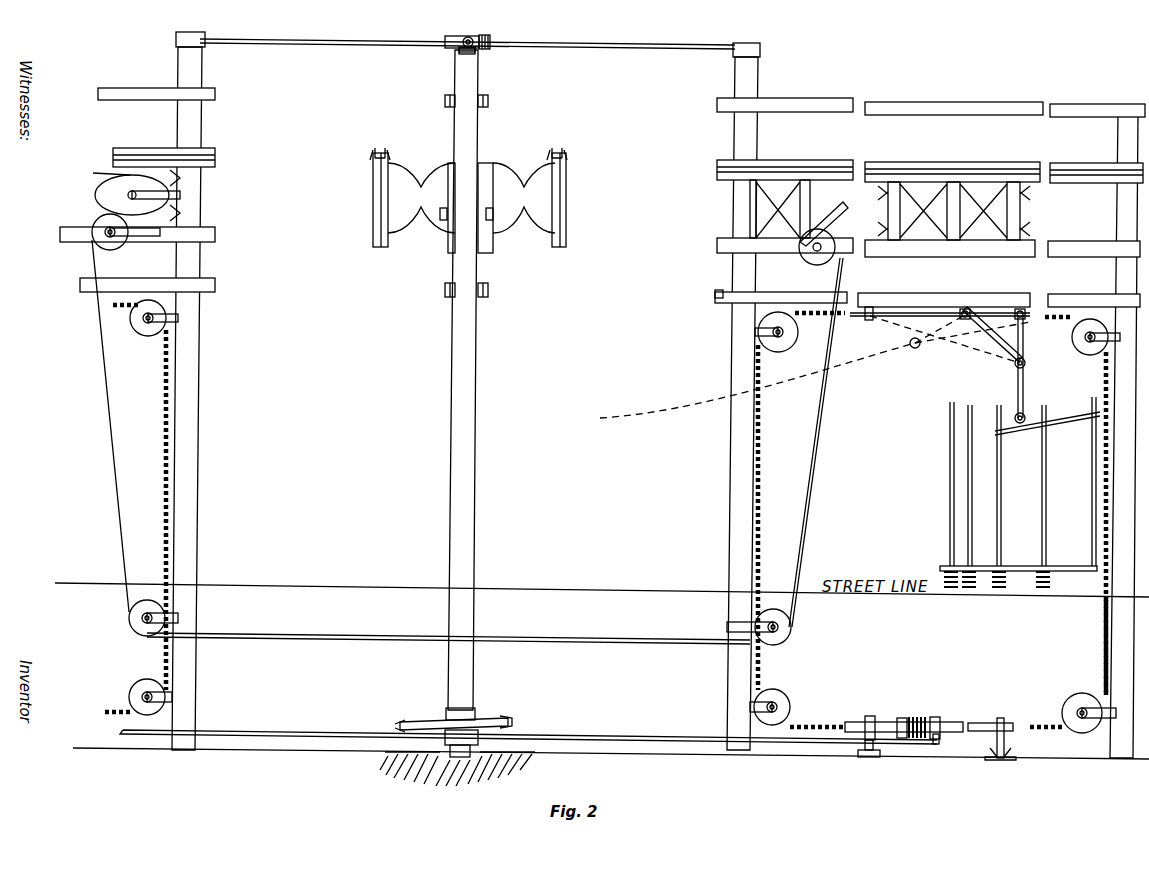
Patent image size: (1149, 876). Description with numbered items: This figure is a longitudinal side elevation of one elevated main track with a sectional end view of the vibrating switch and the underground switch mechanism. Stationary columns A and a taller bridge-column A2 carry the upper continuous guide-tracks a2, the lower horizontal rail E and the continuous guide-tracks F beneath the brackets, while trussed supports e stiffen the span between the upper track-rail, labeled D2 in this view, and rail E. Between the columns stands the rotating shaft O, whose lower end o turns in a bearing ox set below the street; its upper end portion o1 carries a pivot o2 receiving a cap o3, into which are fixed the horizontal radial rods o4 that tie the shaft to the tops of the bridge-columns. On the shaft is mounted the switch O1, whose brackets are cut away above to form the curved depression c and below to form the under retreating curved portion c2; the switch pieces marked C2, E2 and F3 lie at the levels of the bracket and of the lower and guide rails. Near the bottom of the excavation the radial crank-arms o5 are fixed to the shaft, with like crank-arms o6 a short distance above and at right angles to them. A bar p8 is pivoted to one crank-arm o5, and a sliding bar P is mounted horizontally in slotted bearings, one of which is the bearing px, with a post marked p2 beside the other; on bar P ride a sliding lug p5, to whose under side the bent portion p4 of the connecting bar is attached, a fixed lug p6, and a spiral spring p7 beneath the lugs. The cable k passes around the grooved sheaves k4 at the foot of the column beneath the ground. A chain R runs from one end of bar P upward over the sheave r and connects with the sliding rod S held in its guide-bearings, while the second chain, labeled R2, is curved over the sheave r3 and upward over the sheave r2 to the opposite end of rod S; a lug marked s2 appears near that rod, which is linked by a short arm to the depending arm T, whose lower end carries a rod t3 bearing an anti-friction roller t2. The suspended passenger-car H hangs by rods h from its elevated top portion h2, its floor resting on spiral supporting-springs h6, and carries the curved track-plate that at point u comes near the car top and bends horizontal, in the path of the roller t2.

The stationary column A is at (1118, 626).
The bridge column A2 is at (176, 487).
The rotating shaft O is at (471, 378).
The rod o4 is at (368, 46).
The pivot o2 is at (445, 46).
The cap o3 is at (490, 48).
The upper end portion o1 is at (459, 56).
The switch O1 is at (556, 120).
The upper continuous guide-track a2 is at (132, 88).
The rail beams D2 is at (370, 160).
The lower horizontal rail E is at (717, 248).
The continuous guide-track F is at (715, 298).
The mast guide block F3 is at (445, 292).
The cable k is at (464, 398).
The sheave r is at (463, 292).
The chain R is at (571, 516).
The grooved sheave k4 is at (130, 622).
The sheave r2 is at (130, 695).
The right chain R2 is at (1100, 662).
The sheave r3 is at (1066, 702).
The clamp arms C2 is at (469, 203).
The curved depression c is at (514, 177).
The under retreating curved portion c2 is at (570, 205).
The clamp lower ends E2 is at (373, 240).
The trussed support e is at (890, 213).
The sliding rod S is at (815, 362).
The link s2 is at (975, 334).
The arm T is at (1031, 366).
The anti-friction roller t2 is at (1018, 414).
The rod t3 is at (1026, 414).
The point of track-plate u is at (1047, 427).
The suspended passenger-car H is at (1005, 541).
The rod h is at (1046, 481).
The elevated top portion h2 is at (950, 485).
The spiral supporting-spring h6 is at (1050, 583).
The lower end of shaft o is at (460, 704).
The radial crank-arm o5 is at (427, 720).
The crank-arm o6 is at (492, 716).
The bearing ox is at (457, 758).
The bar p8 is at (276, 736).
The sliding bar P is at (955, 722).
The spiral spring p7 is at (870, 716).
The lug p6 is at (902, 718).
The sliding lug p5 is at (934, 717).
The bearing px is at (1000, 718).
The spring stop p2 is at (915, 740).
The longitudinal bent portion of bar p4 is at (920, 744).